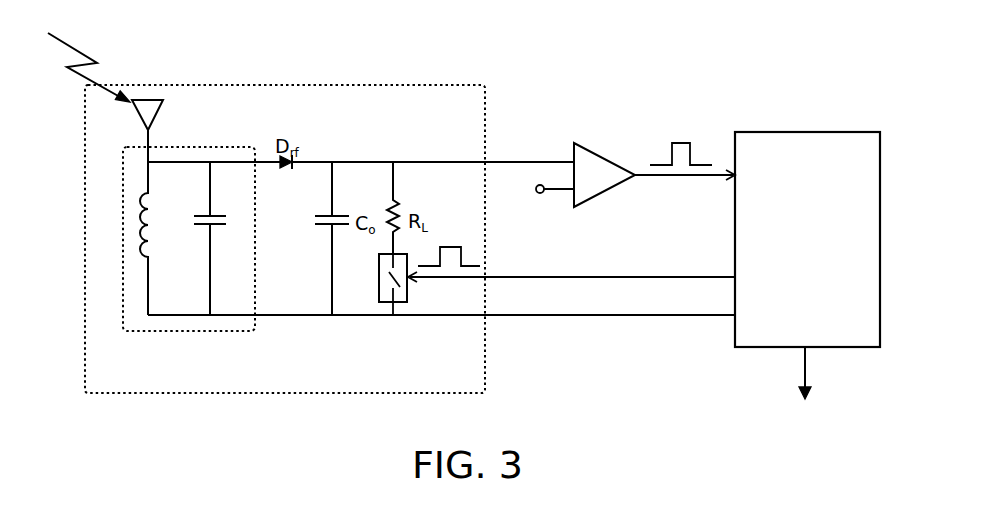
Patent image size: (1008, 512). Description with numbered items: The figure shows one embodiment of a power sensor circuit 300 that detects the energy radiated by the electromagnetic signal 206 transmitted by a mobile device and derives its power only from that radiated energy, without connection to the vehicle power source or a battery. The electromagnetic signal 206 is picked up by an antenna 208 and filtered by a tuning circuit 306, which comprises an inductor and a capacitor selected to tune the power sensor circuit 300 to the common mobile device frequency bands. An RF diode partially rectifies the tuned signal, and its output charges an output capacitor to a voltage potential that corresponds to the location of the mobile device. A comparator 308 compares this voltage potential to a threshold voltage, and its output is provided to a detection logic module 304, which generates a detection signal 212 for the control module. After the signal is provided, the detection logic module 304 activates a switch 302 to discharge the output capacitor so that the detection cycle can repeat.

The electromagnetic signal 206 is at (72, 45).
The antenna 208 is at (148, 100).
The power sensor circuit 300 is at (393, 85).
The tuning circuit 306 is at (180, 147).
The switch 302 is at (379, 292).
The comparator 308 is at (593, 152).
The detection logic module 304 is at (807, 239).
The detection signal 212 is at (805, 373).